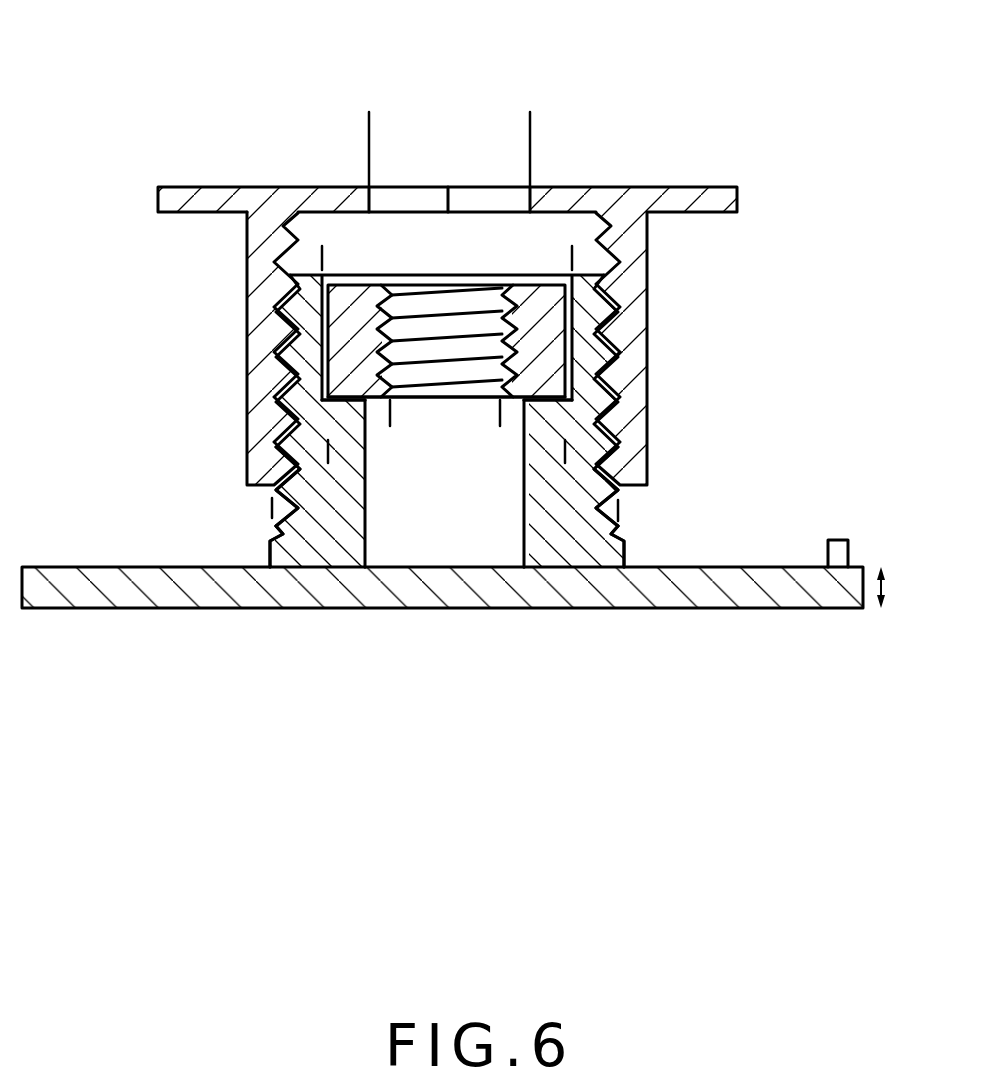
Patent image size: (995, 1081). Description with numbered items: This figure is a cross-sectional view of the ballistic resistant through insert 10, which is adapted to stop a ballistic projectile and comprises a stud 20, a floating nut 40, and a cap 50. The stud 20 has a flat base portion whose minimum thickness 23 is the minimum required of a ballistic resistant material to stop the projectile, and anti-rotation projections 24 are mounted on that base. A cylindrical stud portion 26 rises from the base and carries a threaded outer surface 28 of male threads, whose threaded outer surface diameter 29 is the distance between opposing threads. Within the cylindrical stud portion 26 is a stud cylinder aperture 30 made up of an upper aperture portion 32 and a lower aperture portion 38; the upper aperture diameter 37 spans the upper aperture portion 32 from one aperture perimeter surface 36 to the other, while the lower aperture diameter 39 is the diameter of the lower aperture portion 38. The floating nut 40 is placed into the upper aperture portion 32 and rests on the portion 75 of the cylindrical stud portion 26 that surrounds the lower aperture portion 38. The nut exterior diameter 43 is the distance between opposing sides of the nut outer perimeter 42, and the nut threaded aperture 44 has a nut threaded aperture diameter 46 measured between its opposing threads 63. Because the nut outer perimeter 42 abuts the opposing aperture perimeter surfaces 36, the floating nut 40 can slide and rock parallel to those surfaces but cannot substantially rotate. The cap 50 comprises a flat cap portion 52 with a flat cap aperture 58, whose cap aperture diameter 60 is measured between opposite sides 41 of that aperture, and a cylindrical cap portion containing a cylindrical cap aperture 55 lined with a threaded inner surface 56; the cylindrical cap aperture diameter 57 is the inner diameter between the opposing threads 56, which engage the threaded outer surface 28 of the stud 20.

The ballistic resistant through insert 10 is at (170, 66).
The stud 20 is at (170, 631).
The minimum thickness 23 is at (886, 590).
The anti-rotation projections 24 is at (838, 545).
The cylindrical stud portion 26 is at (276, 551).
The threaded outer surface 28 is at (276, 520).
The threaded outer surface diameter 29 is at (630, 512).
The stud cylinder aperture 30 is at (511, 575).
The upper aperture portion 32 is at (322, 318).
The aperture perimeter surfaces 36 is at (322, 352).
The upper aperture diameter 37 is at (333, 258).
The lower aperture portion 38 is at (405, 553).
The lower aperture diameter 39 is at (376, 493).
The floating nut 40 is at (550, 362).
The opposite sides of the flat cap aperture 41 is at (362, 188).
The nut outer perimeter 42 is at (330, 362).
The nut exterior diameter 43 is at (339, 452).
The nut threaded aperture 44 is at (478, 308).
The nut threaded aperture diameter 46 is at (401, 415).
The cap 50 is at (222, 160).
The flat cap portion 52 is at (267, 187).
The cylindrical cap aperture 55 is at (548, 222).
The threaded inner surface 56 is at (252, 218).
The cylindrical cap aperture diameter 57 is at (309, 228).
The flat cap aperture 58 is at (418, 198).
The cap aperture diameter 60 is at (519, 121).
The threads of the nut threaded aperture 63 is at (345, 410).
The portion of the cylindrical stud portion surrounding the lower aperture portion 75 is at (335, 398).